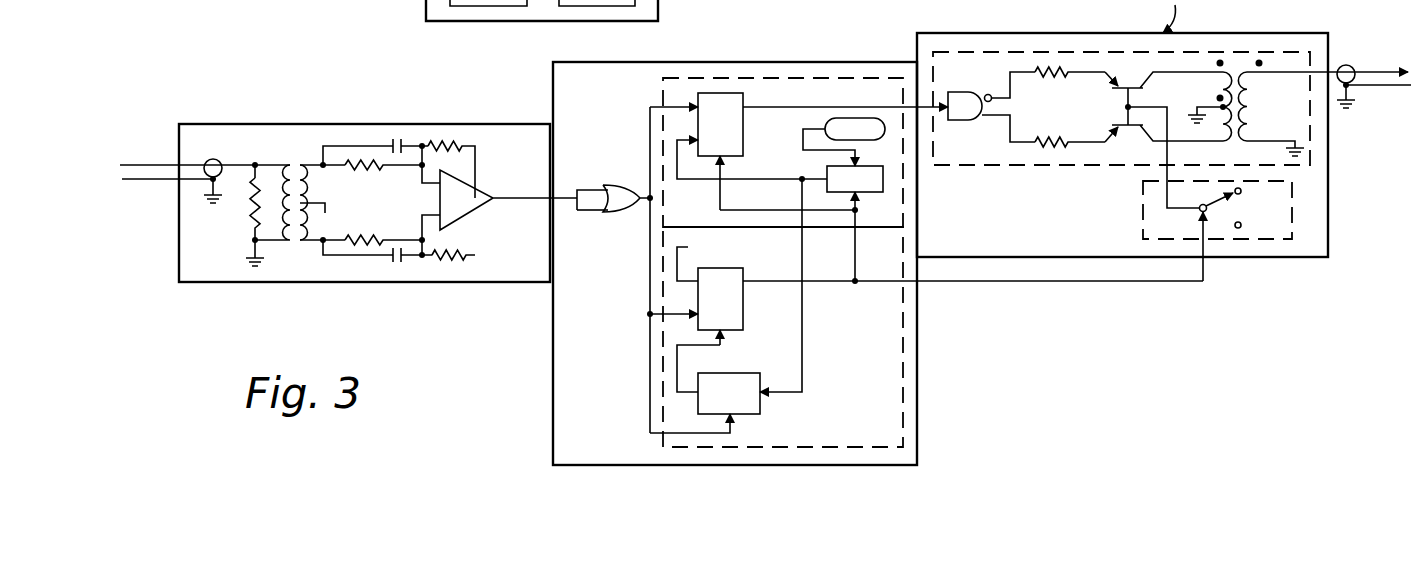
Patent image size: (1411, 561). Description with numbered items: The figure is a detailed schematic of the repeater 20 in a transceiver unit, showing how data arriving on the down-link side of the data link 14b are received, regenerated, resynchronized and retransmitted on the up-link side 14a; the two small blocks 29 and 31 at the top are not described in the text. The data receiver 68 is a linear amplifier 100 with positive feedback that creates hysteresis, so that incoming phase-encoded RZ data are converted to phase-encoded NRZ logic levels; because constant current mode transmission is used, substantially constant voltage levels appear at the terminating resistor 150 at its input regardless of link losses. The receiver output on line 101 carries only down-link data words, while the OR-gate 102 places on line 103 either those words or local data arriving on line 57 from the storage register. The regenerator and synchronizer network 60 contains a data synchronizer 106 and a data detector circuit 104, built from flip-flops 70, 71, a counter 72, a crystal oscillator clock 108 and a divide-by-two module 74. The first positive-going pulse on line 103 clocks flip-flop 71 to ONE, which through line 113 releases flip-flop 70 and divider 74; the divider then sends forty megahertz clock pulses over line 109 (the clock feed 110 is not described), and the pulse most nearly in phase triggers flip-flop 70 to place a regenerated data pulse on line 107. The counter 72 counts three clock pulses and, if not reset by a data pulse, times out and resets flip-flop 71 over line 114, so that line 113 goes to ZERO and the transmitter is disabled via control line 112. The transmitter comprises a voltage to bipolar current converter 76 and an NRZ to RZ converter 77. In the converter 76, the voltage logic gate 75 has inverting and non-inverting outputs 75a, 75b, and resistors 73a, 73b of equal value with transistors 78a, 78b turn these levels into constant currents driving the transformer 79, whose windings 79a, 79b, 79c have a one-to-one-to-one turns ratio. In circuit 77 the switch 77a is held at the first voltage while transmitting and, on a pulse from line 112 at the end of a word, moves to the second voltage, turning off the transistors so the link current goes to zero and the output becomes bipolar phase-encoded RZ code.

The data link (up-link side) 14a is at (1383, 70).
The data link (down-link side) 14b is at (141, 163).
The repeater 20 is at (866, 46).
The receiver block 29 is at (474, 6).
The transmitter block 31 is at (595, 6).
The line 57 is at (578, 214).
The regenerator and synchronizer network 60 is at (745, 62).
The data receiver 68 is at (278, 124).
The flip-flop 70 is at (745, 126).
The flip-flop 71 is at (745, 297).
The counter 72 is at (762, 407).
The resistor 73a is at (1047, 64).
The resistor 73b is at (1047, 133).
The divide-by-two module 74 is at (866, 166).
The voltage logic gate 75 is at (970, 106).
The inverting output 75a is at (991, 93).
The non-inverting output 75b is at (995, 125).
The voltage to bipolar current converter 76 is at (992, 167).
The NRZ to RZ converter 77 is at (1143, 221).
The switch 77a is at (1212, 202).
The transistor 78a is at (1128, 86).
The transistor 78b is at (1129, 130).
The transformer 79 is at (1233, 85).
The winding 79a is at (1230, 119).
The winding 79b is at (1218, 83).
The winding 79c is at (1252, 112).
The linear amplifier 100 is at (481, 168).
The line 101 is at (591, 188).
The OR-gate 102 is at (622, 188).
The line 103 is at (649, 123).
The data detector circuit 104 is at (862, 339).
The data synchronizer 106 is at (707, 78).
The line 107 is at (766, 107).
The local clock 108 is at (849, 118).
The clock line 109 is at (800, 176).
The clock line to divider 110 is at (803, 146).
The control line 112 is at (948, 282).
The line 113 is at (857, 203).
The line 114 is at (725, 346).
The terminating resistor 150 is at (252, 208).